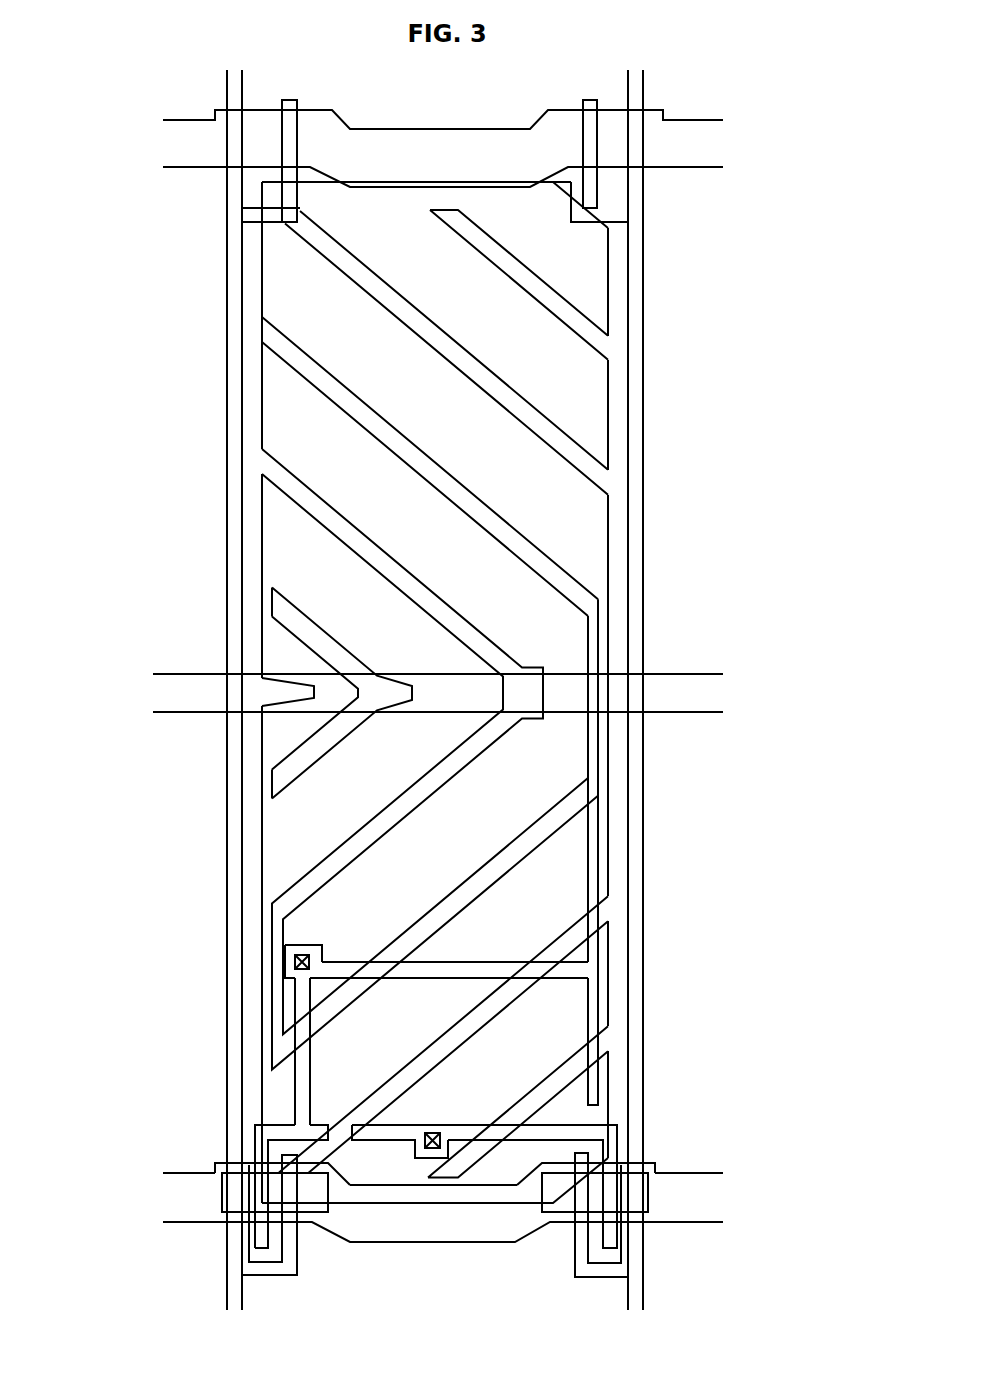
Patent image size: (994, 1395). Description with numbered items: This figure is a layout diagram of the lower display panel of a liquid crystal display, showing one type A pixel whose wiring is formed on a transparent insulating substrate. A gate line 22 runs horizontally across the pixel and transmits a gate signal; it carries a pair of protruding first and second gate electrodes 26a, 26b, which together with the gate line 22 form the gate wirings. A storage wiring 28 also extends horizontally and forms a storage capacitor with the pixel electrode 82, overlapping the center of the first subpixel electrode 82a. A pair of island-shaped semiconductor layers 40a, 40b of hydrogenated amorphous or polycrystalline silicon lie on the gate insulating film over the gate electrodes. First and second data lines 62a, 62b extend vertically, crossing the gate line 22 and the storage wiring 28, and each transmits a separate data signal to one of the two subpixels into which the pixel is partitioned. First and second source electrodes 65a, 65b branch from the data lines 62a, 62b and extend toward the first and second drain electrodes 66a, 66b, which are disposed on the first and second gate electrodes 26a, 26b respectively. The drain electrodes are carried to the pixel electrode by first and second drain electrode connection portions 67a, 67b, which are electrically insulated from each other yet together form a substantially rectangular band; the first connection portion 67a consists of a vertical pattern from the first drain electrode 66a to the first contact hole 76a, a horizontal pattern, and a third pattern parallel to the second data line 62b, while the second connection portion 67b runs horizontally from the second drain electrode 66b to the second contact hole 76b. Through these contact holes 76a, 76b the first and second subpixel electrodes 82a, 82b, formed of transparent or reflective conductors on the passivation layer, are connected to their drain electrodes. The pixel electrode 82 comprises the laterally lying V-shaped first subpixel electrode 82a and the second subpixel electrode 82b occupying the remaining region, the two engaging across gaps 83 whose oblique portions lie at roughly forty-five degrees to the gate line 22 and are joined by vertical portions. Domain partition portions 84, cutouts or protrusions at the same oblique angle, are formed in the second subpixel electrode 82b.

The gate line 22 is at (373, 1255).
The first gate electrode 26a is at (248, 1162).
The second gate electrode 26b is at (637, 1160).
The storage wiring 28 is at (153, 715).
The first semiconductor layer 40a is at (222, 1192).
The second semiconductor layer 40b is at (620, 1208).
The first data line 62a is at (228, 590).
The second data line 62b is at (643, 590).
The first source electrode 65a is at (292, 1188).
The second source electrode 65b is at (578, 1257).
The first drain electrode 66a is at (253, 1135).
The second drain electrode 66b is at (620, 1132).
The first drain electrode connection portion 67a is at (579, 862).
The second drain electrode connection portion 67b is at (518, 1140).
The first contact hole 76a is at (285, 962).
The second contact hole 76b is at (432, 1133).
The pixel electrode 82 is at (80, 276).
The first subpixel electrode 82a is at (258, 388).
The second subpixel electrode 82b is at (258, 266).
The gaps 83 is at (405, 435).
The domain partition portions 84 is at (529, 272).